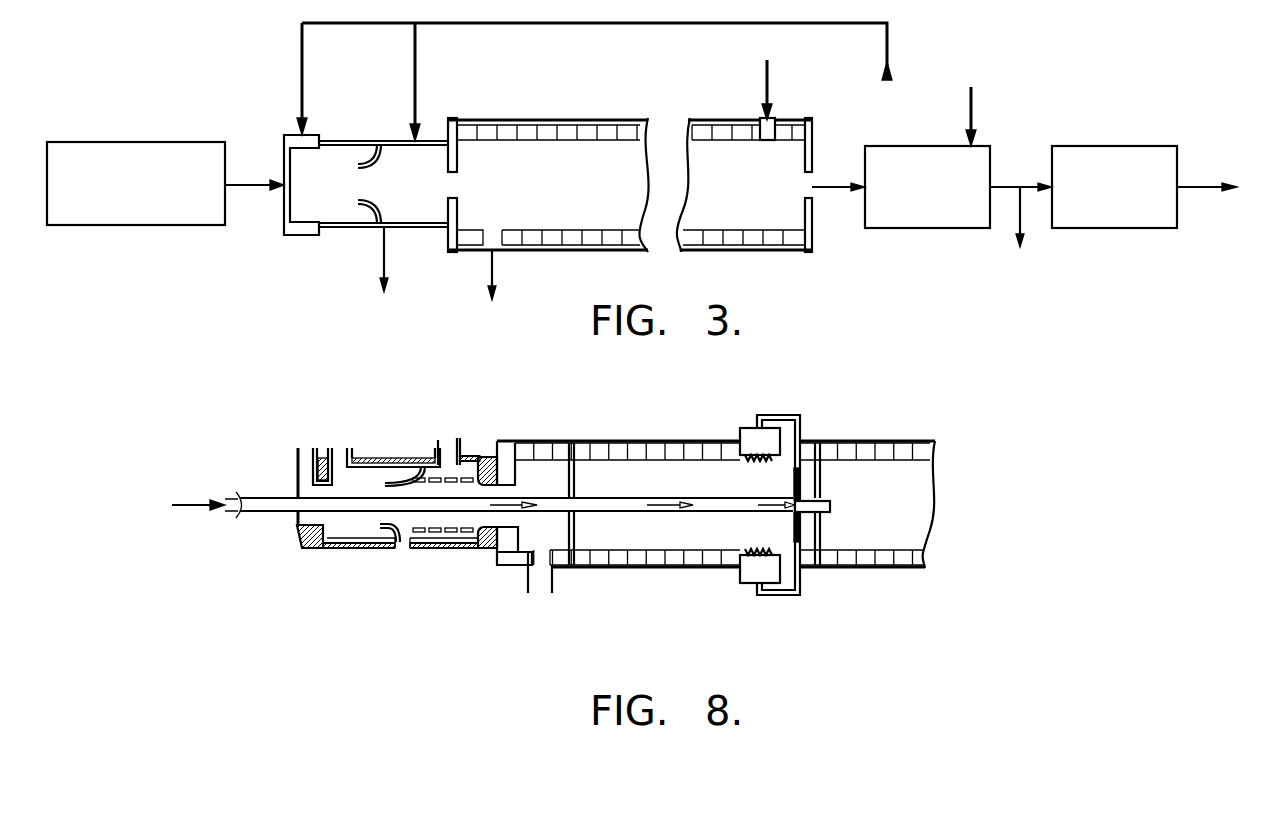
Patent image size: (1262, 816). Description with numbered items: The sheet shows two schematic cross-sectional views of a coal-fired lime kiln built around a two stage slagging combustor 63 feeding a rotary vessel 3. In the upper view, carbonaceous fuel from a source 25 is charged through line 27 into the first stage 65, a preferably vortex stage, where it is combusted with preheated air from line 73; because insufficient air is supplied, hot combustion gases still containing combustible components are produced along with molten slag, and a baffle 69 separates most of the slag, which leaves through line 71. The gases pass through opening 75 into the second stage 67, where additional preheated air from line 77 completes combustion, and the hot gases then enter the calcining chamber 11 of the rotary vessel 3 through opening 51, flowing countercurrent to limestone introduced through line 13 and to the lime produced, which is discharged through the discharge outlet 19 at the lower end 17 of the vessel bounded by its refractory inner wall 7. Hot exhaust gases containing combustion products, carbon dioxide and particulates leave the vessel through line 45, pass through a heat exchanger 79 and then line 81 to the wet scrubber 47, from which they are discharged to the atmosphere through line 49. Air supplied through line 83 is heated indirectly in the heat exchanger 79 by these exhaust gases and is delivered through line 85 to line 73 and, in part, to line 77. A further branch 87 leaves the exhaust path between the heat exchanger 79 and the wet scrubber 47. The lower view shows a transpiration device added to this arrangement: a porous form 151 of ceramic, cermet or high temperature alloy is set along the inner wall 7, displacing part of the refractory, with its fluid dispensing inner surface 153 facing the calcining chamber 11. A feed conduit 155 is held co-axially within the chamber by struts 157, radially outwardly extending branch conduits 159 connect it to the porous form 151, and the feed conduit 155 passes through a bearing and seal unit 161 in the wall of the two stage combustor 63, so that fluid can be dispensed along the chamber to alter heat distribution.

In FIG. 3, the rotary vessel 3 is at (537, 118).
In FIG. 8, the rotary vessel 3 is at (585, 440).
In FIG. 3, the refractory inner wall 7 is at (728, 142).
In FIG. 8, the refractory inner wall 7 is at (692, 460).
In FIG. 3, the calcining chamber 11 is at (724, 188).
In FIG. 8, the calcining chamber 11 is at (684, 491).
In FIG. 3, the line 13 is at (770, 84).
In FIG. 8, the lower end 17 is at (490, 450).
In FIG. 3, the discharge outlet 19 is at (494, 270).
In FIG. 8, the discharge outlet 19 is at (520, 585).
In FIG. 3, the source 25 is at (123, 142).
In FIG. 3, the line 27 is at (242, 178).
In FIG. 8, the line 27 is at (296, 462).
In FIG. 3, the line 45 is at (823, 192).
In FIG. 3, the wet scrubber 47 is at (1142, 228).
In FIG. 3, the line 49 is at (1193, 192).
In FIG. 3, the opening 51 is at (477, 178).
In FIG. 8, the opening 51 is at (513, 496).
In FIG. 3, the two stage slagging combustor 63 is at (383, 131).
In FIG. 8, the two stage slagging combustor 63 is at (404, 449).
In FIG. 3, the first stage 65 is at (336, 228).
In FIG. 8, the first stage 65 is at (330, 550).
In FIG. 3, the second stage 67 is at (424, 228).
In FIG. 8, the second stage 67 is at (470, 552).
In FIG. 3, the baffle 69 is at (368, 168).
In FIG. 8, the baffle 69 is at (383, 525).
In FIG. 3, the line 71 is at (384, 250).
In FIG. 8, the line 71 is at (392, 552).
In FIG. 3, the line 73 is at (302, 68).
In FIG. 8, the line 73 is at (325, 448).
In FIG. 3, the opening 75 is at (387, 188).
In FIG. 8, the opening 75 is at (383, 497).
In FIG. 3, the line 77 is at (415, 68).
In FIG. 8, the line 77 is at (428, 445).
In FIG. 3, the heat exchanger 79 is at (943, 228).
In FIG. 3, the line 81 is at (1003, 187).
In FIG. 3, the line 83 is at (973, 106).
In FIG. 3, the line 85 is at (605, 24).
In FIG. 3, the drain 87 is at (1015, 210).
In FIG. 8, the porous form 151 is at (742, 428).
In FIG. 8, the inner surface 153 is at (778, 468).
In FIG. 8, the feed conduit 155 is at (660, 512).
In FIG. 8, the struts 157 is at (578, 467).
In FIG. 8, the branch conduits 159 is at (792, 515).
In FIG. 8, the bearing and seal unit 161 is at (258, 515).